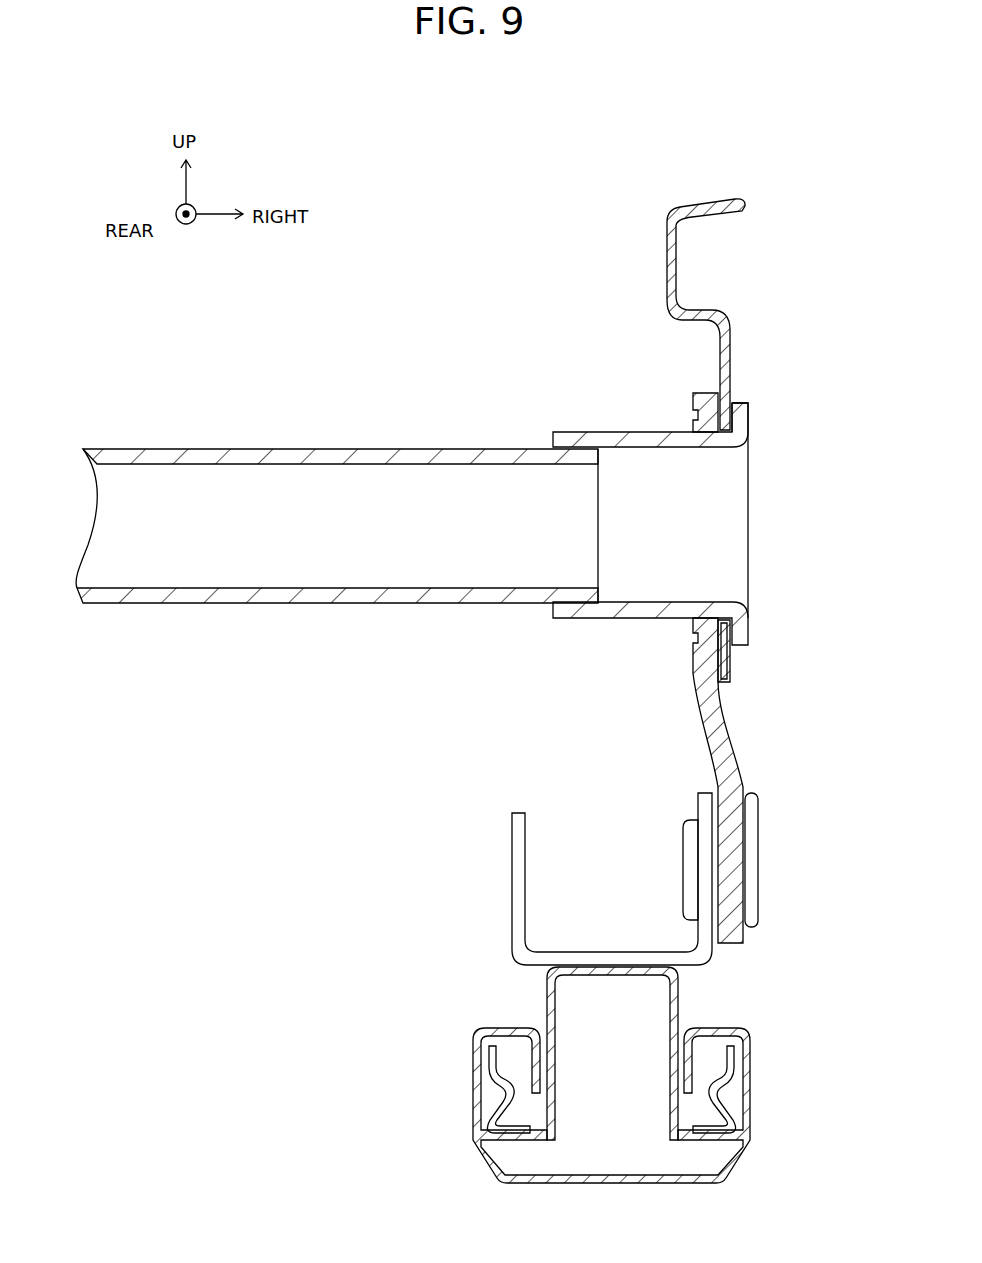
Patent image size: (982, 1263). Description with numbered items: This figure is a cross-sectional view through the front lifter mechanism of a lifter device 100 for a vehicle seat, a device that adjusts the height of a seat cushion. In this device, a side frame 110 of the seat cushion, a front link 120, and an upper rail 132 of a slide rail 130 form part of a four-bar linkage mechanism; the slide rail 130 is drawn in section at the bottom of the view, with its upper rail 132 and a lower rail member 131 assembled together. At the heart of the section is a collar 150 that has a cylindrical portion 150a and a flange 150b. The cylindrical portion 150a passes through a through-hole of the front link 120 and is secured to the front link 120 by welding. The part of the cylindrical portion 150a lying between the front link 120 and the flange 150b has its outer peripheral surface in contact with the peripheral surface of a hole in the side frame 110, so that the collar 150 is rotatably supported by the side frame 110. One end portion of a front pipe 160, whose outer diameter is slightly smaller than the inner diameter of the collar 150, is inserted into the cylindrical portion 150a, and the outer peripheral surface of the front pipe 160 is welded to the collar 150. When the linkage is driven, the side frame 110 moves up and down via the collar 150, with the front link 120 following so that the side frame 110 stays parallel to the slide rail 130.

The lifter device 100 is at (496, 347).
The side frame 110 is at (677, 266).
The front link 120 is at (732, 744).
The slide rail 130 is at (526, 1075).
The rail housing 131 is at (478, 1062).
The upper rail 132 is at (547, 1003).
The collar 150 is at (703, 501).
The cylindrical portion 150a is at (660, 450).
The flange 150b is at (750, 410).
The front pipe 160 is at (239, 449).